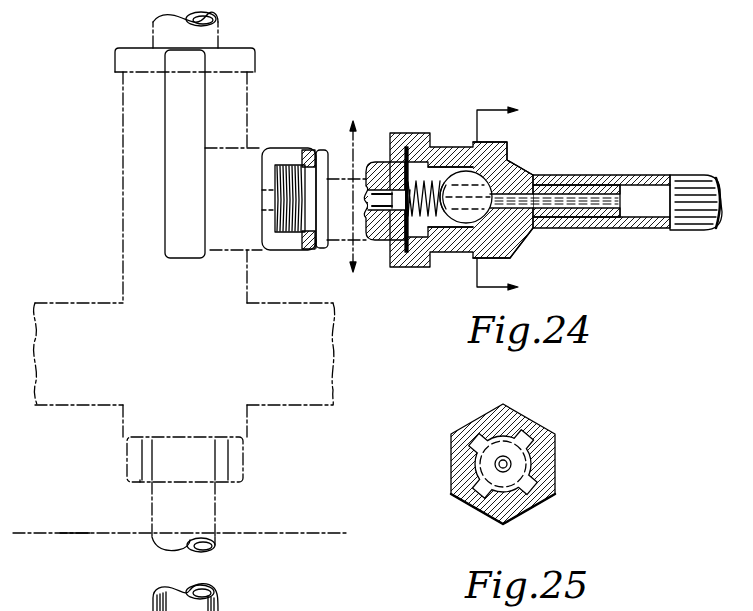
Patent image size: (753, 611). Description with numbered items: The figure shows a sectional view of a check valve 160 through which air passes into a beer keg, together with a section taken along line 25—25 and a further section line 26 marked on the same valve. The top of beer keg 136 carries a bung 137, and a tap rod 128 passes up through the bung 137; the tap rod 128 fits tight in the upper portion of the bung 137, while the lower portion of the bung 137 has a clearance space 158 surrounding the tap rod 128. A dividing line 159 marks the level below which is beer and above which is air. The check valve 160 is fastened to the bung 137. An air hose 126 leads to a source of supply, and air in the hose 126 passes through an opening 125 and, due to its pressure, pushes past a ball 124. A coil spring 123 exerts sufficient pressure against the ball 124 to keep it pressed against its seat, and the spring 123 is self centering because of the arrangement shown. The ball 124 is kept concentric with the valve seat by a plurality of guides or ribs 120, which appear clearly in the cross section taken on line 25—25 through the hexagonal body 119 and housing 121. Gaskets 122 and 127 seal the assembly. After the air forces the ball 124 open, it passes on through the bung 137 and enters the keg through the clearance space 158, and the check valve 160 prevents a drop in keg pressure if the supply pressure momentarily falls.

In FIG. 24, the hexagonal valve body 119 is at (520, 154).
In FIG. 25, the hexagonal valve body 119 is at (540, 432).
In FIG. 24, the guides or ribs 120 is at (431, 156).
In FIG. 25, the guides or ribs 120 is at (480, 432).
In FIG. 24, the valve housing 121 is at (416, 146).
In FIG. 24, the gasket 122 is at (407, 254).
In FIG. 24, the coil spring 123 is at (383, 162).
In FIG. 24, the ball 124 is at (505, 184).
In FIG. 24, the opening 125 is at (603, 204).
In FIG. 25, the opening 125 is at (512, 464).
In FIG. 24, the air hose 126 is at (660, 175).
In FIG. 24, the gasket 127 is at (303, 152).
In FIG. 24, the tap rod 128 is at (218, 33).
In FIG. 24, the top of beer keg 136 is at (273, 406).
In FIG. 24, the bung 137 is at (257, 157).
In FIG. 24, the clearance space 158 is at (145, 480).
In FIG. 24, the dividing line 159 is at (85, 533).
In FIG. 24, the check valve 160 is at (325, 247).
In FIG. 24, the section line 25— 25 is at (497, 198).
In FIG. 24, the section line 26- 26 is at (347, 199).